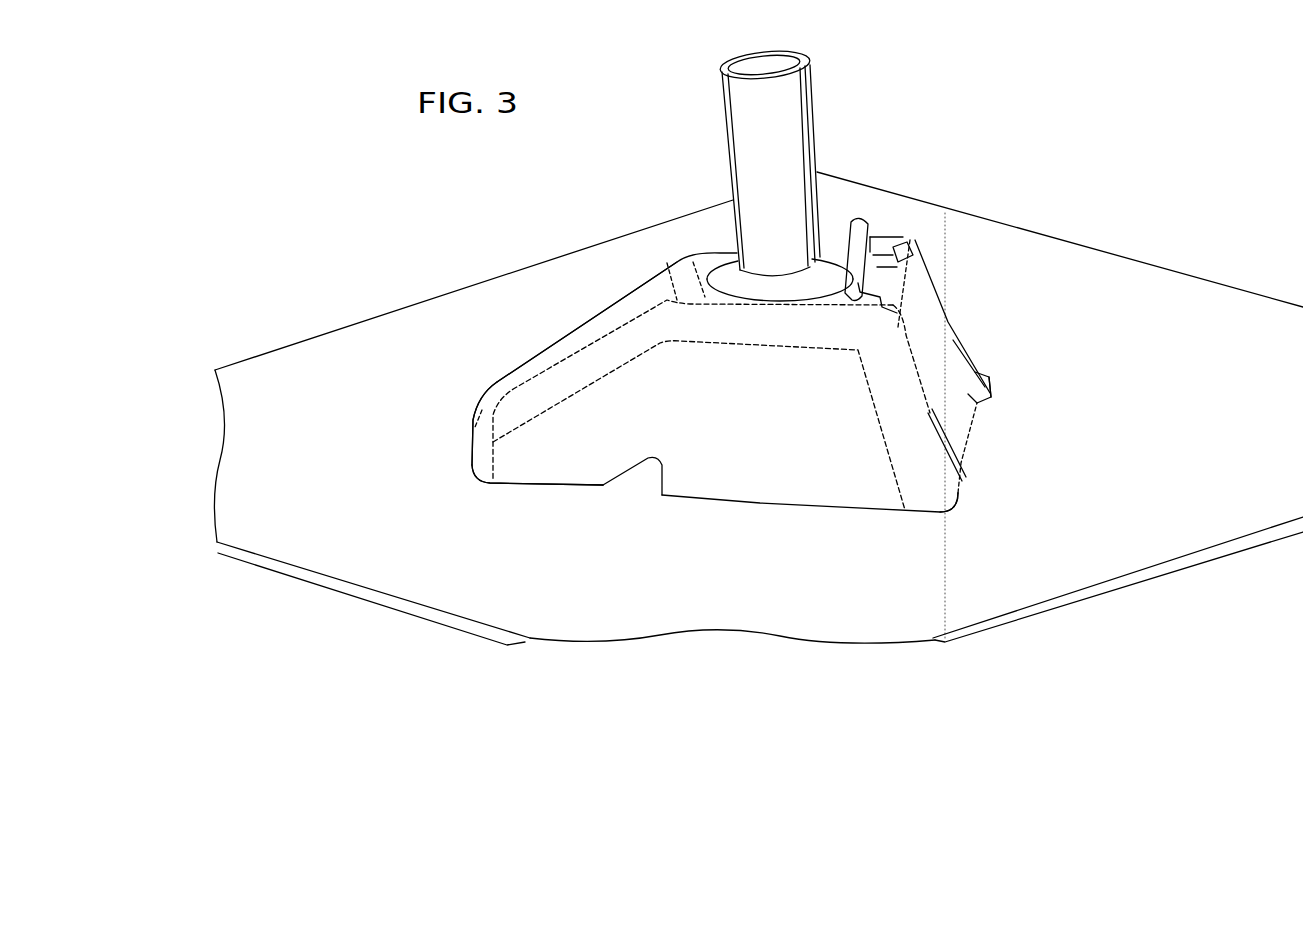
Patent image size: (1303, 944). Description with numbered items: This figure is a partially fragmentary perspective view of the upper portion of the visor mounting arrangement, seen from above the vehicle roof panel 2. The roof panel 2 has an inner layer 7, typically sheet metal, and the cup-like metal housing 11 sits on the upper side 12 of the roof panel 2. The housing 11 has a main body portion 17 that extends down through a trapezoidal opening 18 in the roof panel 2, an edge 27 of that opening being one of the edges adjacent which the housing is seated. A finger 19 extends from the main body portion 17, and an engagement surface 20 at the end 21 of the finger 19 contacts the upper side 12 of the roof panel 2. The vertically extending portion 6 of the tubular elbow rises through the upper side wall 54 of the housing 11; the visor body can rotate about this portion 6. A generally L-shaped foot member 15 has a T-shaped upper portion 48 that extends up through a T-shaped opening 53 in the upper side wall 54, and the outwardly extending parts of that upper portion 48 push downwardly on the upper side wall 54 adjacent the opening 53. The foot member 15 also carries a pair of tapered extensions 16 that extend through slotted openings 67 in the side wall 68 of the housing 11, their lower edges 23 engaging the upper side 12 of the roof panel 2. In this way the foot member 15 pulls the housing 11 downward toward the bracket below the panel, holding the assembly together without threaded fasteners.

The vehicle roof panel 2 is at (333, 483).
The vertically extending portion 6 is at (814, 136).
The inner layer 7 is at (407, 573).
The housing 11 is at (951, 289).
The upper side 12 is at (440, 317).
The foot member 15 is at (880, 210).
The tapered extensions 16 is at (973, 367).
The main body portion 17 is at (737, 475).
The trapezoidal opening 18 is at (660, 495).
The finger 19 is at (585, 335).
The engagement surface 20 is at (532, 487).
The end 21 is at (520, 405).
The lower edges 23 is at (990, 394).
The edge 27 is at (975, 425).
The T-shaped upper portion 48 is at (903, 238).
The T-shaped opening 53 is at (870, 233).
The upper side wall 54 is at (840, 240).
The slotted openings 67 is at (953, 340).
The side wall 68 is at (955, 440).